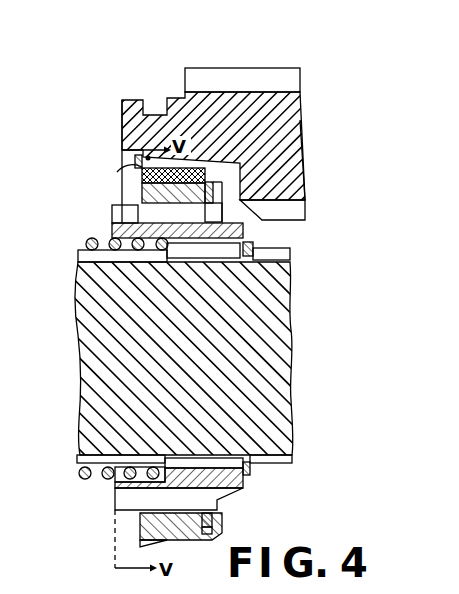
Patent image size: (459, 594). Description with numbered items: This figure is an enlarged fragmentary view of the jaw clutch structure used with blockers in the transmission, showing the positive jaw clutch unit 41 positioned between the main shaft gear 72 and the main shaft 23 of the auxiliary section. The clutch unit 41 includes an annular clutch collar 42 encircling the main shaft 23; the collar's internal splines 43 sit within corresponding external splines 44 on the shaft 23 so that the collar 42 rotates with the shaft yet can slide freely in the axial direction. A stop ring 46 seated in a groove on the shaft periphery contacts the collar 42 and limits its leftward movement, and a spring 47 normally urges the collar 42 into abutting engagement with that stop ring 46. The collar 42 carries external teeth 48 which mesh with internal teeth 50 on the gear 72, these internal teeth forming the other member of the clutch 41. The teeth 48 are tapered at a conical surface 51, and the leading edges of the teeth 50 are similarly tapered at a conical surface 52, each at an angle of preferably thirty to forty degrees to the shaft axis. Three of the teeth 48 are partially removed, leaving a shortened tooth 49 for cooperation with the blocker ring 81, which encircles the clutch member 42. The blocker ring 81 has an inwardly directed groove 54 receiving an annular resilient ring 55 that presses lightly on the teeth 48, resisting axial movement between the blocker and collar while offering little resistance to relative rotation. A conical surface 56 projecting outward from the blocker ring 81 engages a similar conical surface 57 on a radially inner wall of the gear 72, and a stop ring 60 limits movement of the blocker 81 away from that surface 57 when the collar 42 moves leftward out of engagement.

The main shaft 23 is at (110, 333).
The jaw clutch unit 41 is at (102, 221).
The clutch collar 42 is at (86, 243).
The internal splines 43 is at (190, 250).
The external splines 44 is at (278, 253).
The stop ring 46 is at (250, 243).
The spring 47 is at (78, 256).
The external teeth 48 is at (106, 497).
The shortened tooth 49 is at (112, 208).
The internal teeth 50 is at (290, 210).
The tapered conical surface 51 is at (224, 496).
The tapered conical surface 52 is at (300, 183).
The inwardly directed groove 54 is at (228, 178).
The annular resilient ring 55 is at (220, 199).
The conical surface 56 is at (148, 156).
The conical surface 57 is at (134, 161).
The stop ring 60 is at (142, 166).
The main shaft gear 72 is at (272, 64).
The blocker ring 81 is at (158, 185).